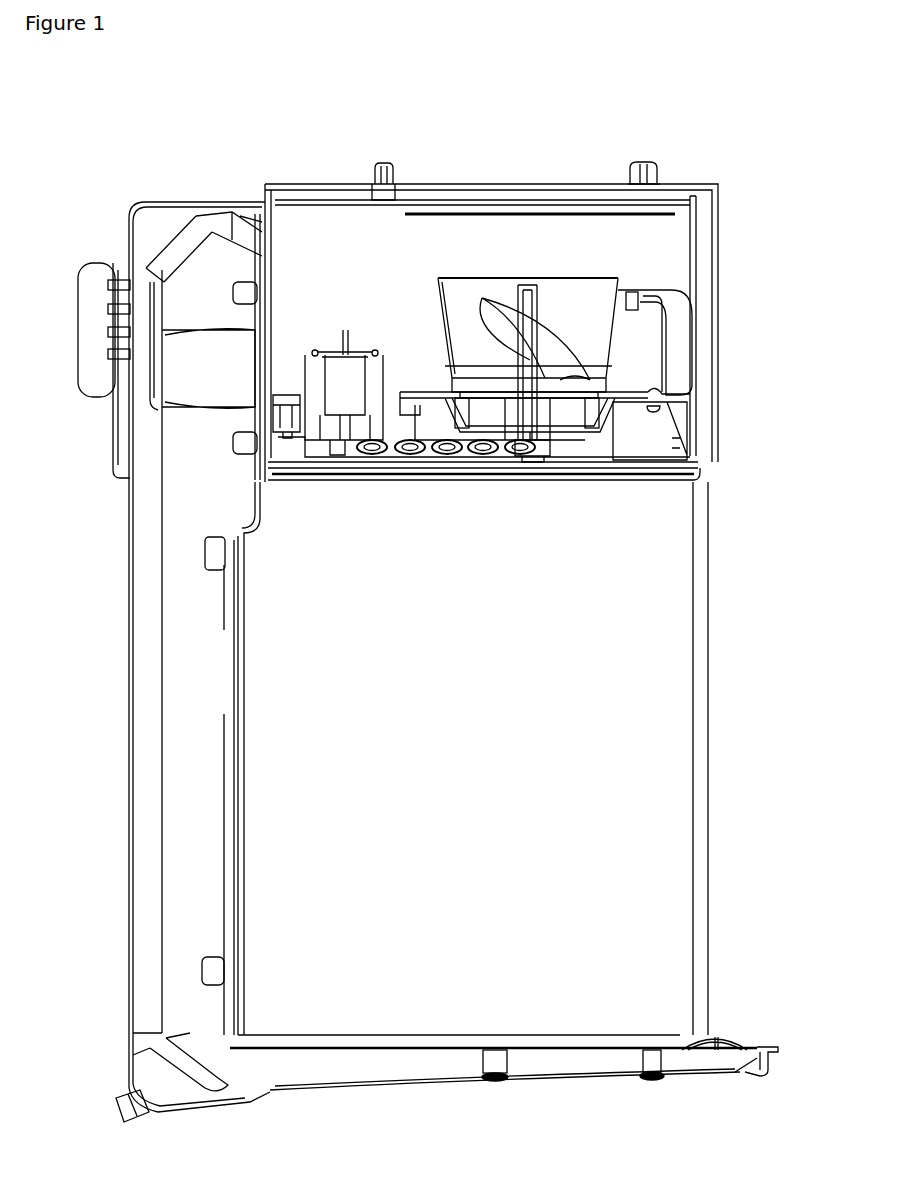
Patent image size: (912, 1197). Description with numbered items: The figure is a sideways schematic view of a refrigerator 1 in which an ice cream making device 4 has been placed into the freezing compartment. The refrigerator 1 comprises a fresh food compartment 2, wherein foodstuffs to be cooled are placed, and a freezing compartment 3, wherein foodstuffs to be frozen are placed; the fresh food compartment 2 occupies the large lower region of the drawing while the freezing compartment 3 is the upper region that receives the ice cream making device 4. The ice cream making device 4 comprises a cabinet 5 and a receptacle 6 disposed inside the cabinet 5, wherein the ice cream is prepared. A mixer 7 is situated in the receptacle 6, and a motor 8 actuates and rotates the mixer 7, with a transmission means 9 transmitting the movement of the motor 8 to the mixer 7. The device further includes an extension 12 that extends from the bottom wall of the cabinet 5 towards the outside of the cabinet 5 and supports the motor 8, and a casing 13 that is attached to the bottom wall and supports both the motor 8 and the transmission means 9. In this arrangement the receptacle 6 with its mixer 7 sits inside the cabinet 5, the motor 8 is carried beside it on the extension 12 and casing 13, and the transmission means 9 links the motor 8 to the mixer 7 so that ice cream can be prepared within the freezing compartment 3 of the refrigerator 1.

The refrigerator 1 is at (347, 123).
The fresh food compartment 2 is at (477, 709).
The freezing compartment 3 is at (312, 277).
The ice cream making device 4 is at (378, 240).
The cabinet 5 is at (362, 358).
The receptacle 6 is at (570, 280).
The mixer 7 is at (500, 315).
The motor 8 is at (333, 350).
The transmission means 9 is at (550, 454).
The extension 12 is at (300, 395).
The casing 13 is at (388, 457).